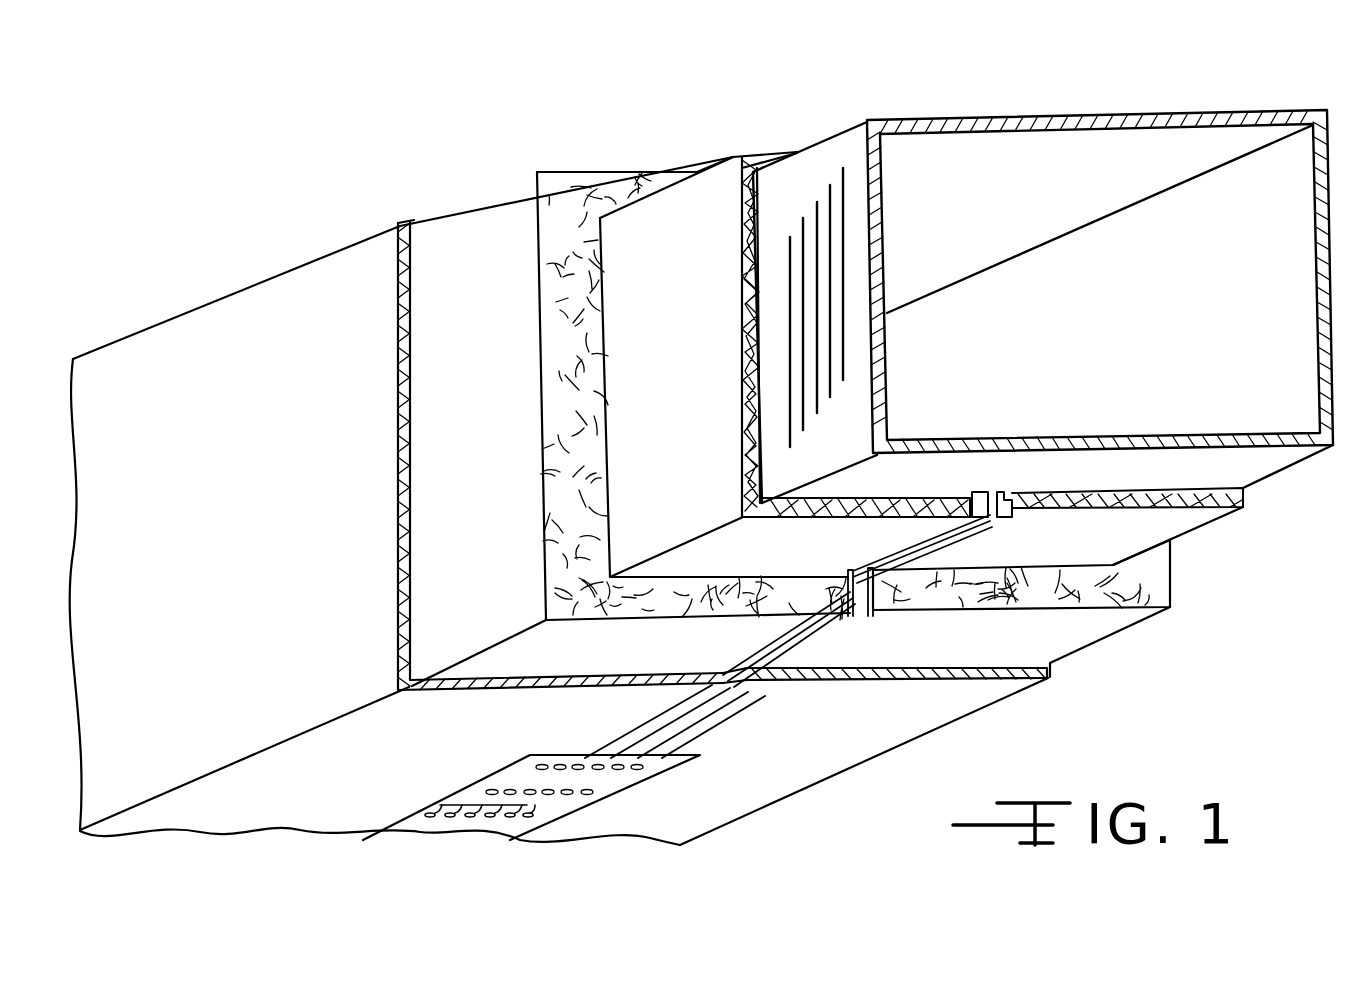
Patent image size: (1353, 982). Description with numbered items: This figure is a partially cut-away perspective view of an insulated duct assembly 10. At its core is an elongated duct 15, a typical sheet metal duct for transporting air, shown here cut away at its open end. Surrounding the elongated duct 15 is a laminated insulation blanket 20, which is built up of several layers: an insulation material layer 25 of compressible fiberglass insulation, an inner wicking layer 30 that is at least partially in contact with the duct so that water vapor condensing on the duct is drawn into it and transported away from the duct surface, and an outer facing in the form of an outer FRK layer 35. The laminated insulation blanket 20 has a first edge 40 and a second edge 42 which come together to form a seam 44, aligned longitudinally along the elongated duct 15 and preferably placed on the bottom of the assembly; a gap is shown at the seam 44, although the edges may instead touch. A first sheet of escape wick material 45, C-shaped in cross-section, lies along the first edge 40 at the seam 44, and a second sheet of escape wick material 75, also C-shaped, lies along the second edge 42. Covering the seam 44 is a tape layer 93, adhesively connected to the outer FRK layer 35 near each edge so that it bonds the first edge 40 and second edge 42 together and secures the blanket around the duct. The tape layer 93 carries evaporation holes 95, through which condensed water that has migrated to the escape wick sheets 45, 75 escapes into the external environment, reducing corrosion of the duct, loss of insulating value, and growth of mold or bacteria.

The insulated duct assembly 10 is at (850, 88).
The elongated duct 15 is at (1113, 118).
The laminated insulation blanket 20 is at (785, 130).
The insulation material layer 25 is at (1152, 580).
The inner wicking layer 30 is at (1243, 492).
The outer FRK layer 35 is at (1052, 668).
The first edge 40 is at (797, 593).
The second edge 42 is at (887, 600).
The seam 44 is at (856, 580).
The first sheet of escape wick material 45 is at (637, 722).
The second sheet of escape wick material 75 is at (718, 710).
The tape layer 93 is at (610, 778).
The evaporation holes 95 is at (473, 805).